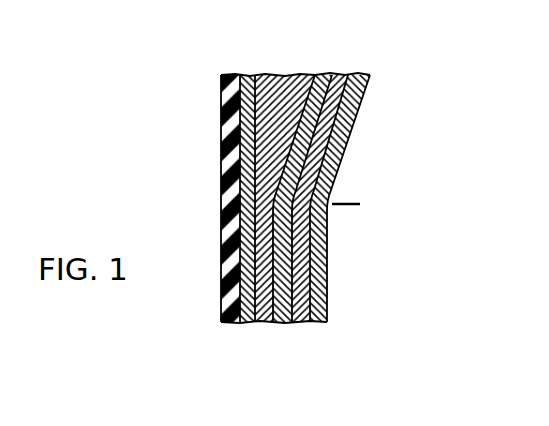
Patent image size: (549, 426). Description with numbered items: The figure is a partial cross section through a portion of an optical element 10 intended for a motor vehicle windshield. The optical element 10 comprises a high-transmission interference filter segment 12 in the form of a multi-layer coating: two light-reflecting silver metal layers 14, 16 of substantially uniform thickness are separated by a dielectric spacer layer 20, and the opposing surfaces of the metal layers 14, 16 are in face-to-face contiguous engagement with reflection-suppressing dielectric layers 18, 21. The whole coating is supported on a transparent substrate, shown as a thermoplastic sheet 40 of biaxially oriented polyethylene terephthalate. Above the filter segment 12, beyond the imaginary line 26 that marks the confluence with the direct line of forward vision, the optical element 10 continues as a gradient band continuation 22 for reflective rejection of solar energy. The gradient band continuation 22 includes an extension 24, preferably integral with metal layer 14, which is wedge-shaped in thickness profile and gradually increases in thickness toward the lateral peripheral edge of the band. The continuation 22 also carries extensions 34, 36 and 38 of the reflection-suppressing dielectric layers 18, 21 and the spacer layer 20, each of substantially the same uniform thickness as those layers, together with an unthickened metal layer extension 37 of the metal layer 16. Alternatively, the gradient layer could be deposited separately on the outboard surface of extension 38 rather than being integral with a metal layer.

The optical element 10 is at (183, 159).
The high-transmission interference filter segment 12 is at (344, 277).
The light-reflecting silver metal layer 14 is at (263, 325).
The light-reflecting silver metal layer 16 is at (298, 325).
The reflection-suppressing dielectric layer 18 is at (245, 323).
The dielectric spacer layer 20 is at (275, 325).
The reflection-suppressing dielectric layer 21 is at (328, 312).
The gradient band continuation 22 is at (362, 144).
The extension 24 is at (283, 75).
The imaginary line 26 is at (345, 208).
The extension of reflection-suppressing dielectric layer 34 is at (247, 75).
The extension of dielectric layer 36 is at (325, 75).
The unthickened metal layer extension 37 is at (340, 75).
The extension of dielectric layer 38 is at (369, 75).
The thermoplastic sheet 40 is at (221, 94).